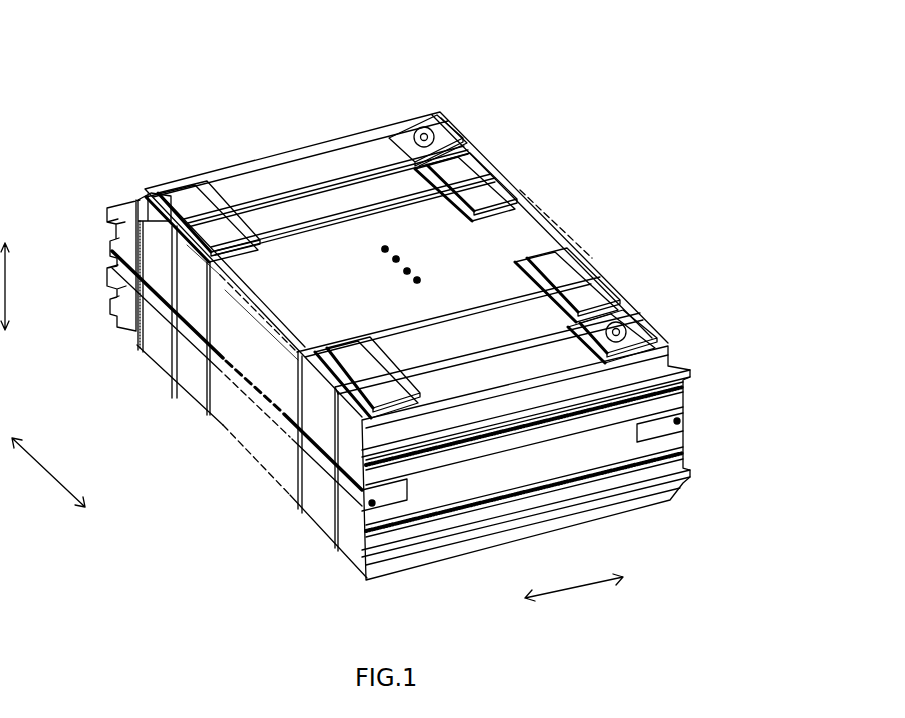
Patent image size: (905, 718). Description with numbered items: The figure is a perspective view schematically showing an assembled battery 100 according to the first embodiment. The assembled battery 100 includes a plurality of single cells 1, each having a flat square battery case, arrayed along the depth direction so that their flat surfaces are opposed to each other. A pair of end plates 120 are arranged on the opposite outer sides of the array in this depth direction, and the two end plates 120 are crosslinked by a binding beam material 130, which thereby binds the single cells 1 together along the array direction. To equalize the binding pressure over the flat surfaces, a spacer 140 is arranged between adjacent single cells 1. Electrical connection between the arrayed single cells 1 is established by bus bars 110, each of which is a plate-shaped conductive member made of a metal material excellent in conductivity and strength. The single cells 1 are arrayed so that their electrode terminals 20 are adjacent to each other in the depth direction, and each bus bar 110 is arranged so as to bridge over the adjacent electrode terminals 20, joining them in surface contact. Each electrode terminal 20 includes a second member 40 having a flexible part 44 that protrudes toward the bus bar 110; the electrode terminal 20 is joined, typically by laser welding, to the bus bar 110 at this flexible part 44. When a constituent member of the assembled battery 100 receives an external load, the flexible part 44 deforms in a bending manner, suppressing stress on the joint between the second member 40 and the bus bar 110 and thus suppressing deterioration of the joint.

The assembled battery 100 is at (82, 41).
The single cell 1 is at (383, 187).
The electrode terminal 20 is at (397, 137).
The second member 40 is at (407, 263).
The flexible part 44 is at (428, 132).
The bus bar 110 is at (197, 193).
The end plate 120 is at (118, 212).
The binding beam material 130 is at (300, 443).
The spacer 140 is at (165, 380).